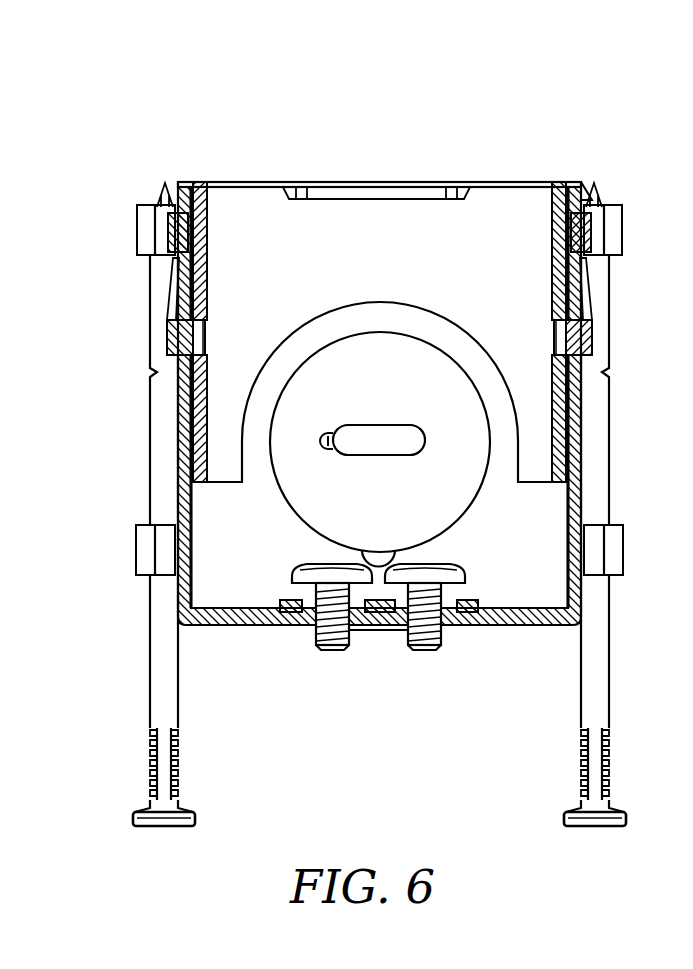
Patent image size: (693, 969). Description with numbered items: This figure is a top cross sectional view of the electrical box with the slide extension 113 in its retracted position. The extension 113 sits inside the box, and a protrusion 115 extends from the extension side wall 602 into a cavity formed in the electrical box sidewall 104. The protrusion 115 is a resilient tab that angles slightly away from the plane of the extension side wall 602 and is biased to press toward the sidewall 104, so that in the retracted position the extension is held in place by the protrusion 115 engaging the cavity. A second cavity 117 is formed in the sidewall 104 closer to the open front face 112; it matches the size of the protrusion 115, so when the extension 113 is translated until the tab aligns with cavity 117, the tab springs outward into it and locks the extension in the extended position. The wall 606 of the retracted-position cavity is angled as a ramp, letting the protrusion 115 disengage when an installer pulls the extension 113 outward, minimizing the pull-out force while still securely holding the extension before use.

The electrical box sidewall 104 is at (573, 433).
The open front face 112 is at (568, 182).
The extension 113 is at (257, 215).
The protrusion 115 is at (570, 340).
The cavity 117 is at (587, 223).
The extension side wall 602 is at (557, 210).
The wall of cavity 606 is at (180, 322).